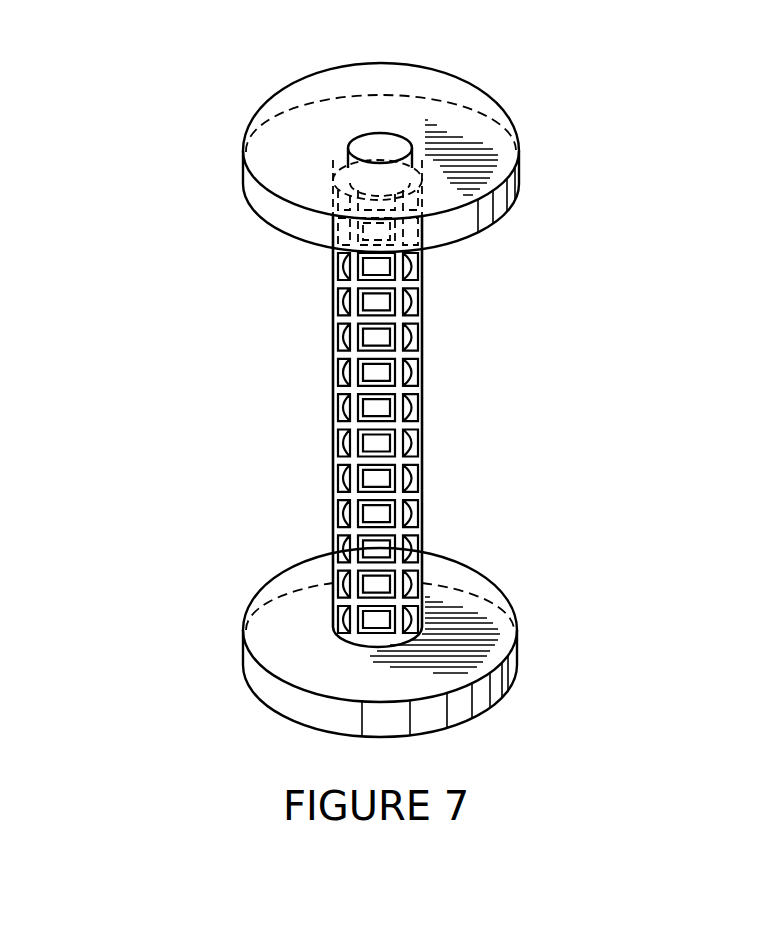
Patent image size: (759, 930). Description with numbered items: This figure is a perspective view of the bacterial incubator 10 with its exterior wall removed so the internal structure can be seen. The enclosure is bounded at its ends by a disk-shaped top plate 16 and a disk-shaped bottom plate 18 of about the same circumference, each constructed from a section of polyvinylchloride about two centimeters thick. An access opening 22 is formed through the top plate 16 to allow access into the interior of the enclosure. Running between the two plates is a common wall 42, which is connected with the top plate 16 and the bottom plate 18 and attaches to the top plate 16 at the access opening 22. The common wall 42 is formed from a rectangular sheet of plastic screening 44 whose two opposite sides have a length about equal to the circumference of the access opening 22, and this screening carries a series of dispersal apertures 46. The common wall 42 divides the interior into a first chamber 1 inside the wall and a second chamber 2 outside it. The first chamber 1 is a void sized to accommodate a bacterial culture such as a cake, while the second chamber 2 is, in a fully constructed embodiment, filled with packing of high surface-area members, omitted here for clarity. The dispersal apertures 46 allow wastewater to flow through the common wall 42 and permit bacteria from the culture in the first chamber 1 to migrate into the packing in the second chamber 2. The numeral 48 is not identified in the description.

The bacterial incubator 10 is at (620, 345).
The top plate 16 is at (282, 213).
The bottom plate 18 is at (487, 683).
The access opening 22 is at (382, 145).
The common wall 42 is at (423, 490).
The plastic screening 44 is at (423, 423).
The dispersal apertures 46 is at (337, 325).
The hidden hub recess 48 is at (420, 198).
The first chamber 1 is at (367, 557).
The second chamber 2 is at (301, 652).